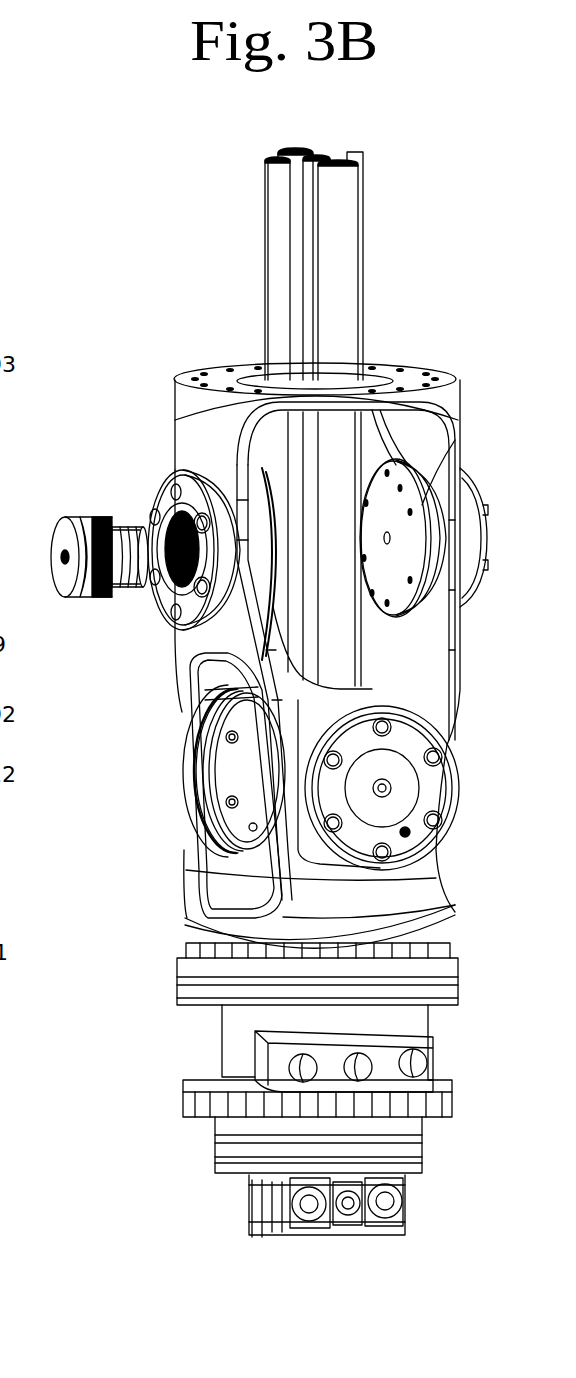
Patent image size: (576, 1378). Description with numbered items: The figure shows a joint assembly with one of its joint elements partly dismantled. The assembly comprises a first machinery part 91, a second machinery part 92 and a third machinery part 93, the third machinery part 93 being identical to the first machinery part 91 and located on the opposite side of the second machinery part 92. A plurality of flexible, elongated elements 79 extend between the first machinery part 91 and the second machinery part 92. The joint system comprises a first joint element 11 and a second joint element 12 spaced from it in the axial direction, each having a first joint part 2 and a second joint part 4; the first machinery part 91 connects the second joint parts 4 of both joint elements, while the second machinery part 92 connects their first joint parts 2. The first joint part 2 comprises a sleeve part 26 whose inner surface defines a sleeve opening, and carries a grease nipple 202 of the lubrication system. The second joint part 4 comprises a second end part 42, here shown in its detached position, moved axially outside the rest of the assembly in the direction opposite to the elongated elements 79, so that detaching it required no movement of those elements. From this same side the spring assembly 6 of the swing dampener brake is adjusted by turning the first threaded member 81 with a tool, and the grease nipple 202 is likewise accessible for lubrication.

The flexible elongated elements 79 is at (363, 218).
The third machinery part 93 is at (443, 380).
The grease nipple 202 is at (156, 500).
The spring assembly 6 is at (122, 520).
The second end part 42 is at (53, 527).
The first threaded member 81 is at (61, 558).
The sleeve part 26 is at (156, 600).
The second machinery part 92 is at (456, 693).
The first joint part 2 is at (445, 737).
The second joint element 12 is at (450, 780).
The second joint part 4 is at (436, 848).
The first joint element 11 is at (188, 758).
The first machinery part 91 is at (452, 918).